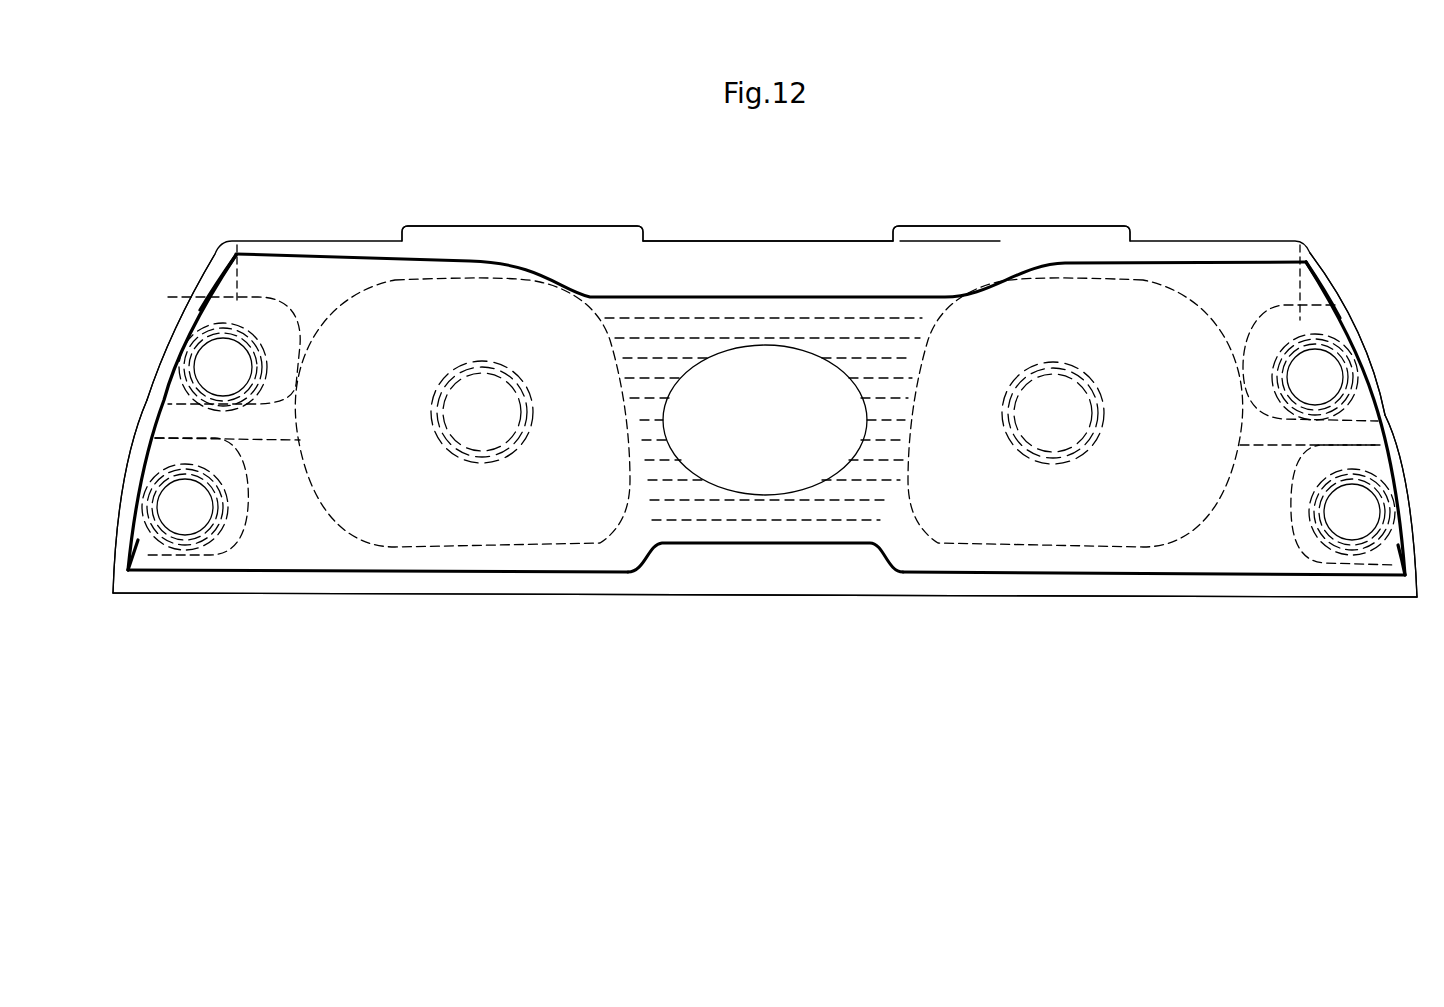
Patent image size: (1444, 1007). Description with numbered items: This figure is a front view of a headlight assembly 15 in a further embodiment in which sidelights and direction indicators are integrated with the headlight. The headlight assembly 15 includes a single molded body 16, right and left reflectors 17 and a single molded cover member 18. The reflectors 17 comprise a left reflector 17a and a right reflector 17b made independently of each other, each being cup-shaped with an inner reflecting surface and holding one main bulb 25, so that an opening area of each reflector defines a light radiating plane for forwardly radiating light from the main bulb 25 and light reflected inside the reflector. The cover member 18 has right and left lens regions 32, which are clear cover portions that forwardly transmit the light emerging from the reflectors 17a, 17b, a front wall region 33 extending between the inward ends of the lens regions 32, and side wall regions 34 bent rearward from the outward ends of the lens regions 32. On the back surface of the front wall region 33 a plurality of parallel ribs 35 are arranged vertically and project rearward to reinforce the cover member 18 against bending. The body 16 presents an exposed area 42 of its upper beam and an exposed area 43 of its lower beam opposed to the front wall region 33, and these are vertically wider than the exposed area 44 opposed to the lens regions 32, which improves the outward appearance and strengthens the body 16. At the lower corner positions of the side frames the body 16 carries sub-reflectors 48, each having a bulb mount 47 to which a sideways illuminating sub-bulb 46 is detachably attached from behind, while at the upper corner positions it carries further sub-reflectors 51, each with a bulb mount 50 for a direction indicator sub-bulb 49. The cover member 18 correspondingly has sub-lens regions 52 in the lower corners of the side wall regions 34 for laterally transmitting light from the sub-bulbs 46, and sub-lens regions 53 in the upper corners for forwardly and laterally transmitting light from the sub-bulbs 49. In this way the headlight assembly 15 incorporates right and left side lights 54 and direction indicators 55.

The headlight assembly 15 is at (373, 612).
The body 16 is at (948, 241).
The reflectors 17 is at (768, 471).
The left reflector 17a is at (453, 527).
The right reflector 17b is at (1078, 527).
The cover member 18 is at (545, 572).
The main bulb 25 is at (500, 437).
The lens regions 32 is at (520, 283).
The front wall region 33 is at (752, 533).
The side wall regions 34 is at (764, 449).
The parallel ribs 35 is at (724, 337).
The exposed area 42 is at (803, 241).
The exposed area 43 is at (833, 598).
The exposed area 44 is at (373, 241).
The sideways illuminating sub-bulb 46 is at (195, 522).
The bulb mount 47 is at (300, 440).
The sub-reflector 48 is at (252, 492).
The direction indicator sub-bulb 49 is at (290, 402).
The bulb mount 50 is at (303, 355).
The sub-reflector 51 is at (237, 245).
The sub-lens region 52 is at (142, 543).
The sub-lens region 53 is at (1373, 250).
The side lights 54 is at (132, 452).
The direction indicators 55 is at (172, 332).